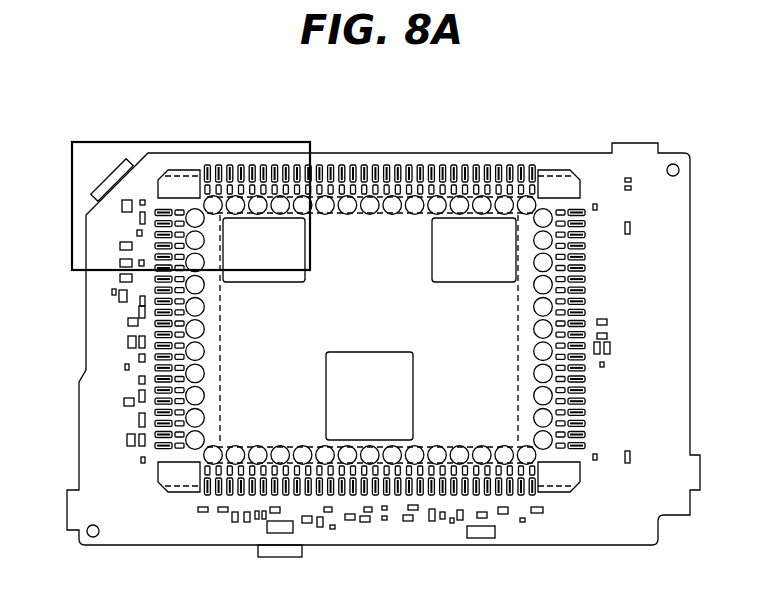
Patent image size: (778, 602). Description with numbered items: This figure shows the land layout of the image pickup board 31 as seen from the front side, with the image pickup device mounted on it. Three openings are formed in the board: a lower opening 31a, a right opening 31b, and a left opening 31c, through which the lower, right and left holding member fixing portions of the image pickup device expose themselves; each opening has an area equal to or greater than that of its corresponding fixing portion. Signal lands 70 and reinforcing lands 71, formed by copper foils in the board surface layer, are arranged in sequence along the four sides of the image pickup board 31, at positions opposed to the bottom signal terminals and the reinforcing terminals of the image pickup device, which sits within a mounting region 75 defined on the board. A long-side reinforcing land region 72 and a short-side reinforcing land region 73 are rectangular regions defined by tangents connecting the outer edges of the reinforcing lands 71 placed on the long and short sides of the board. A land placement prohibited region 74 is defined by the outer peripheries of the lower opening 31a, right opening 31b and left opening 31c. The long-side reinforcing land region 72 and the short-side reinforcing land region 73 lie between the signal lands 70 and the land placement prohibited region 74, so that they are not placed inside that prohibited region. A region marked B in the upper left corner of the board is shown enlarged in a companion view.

The image pickup board 31 is at (668, 326).
The lower opening 31a is at (374, 422).
The right opening 31b is at (280, 235).
The left opening 31c is at (490, 232).
The signal lands 70 is at (428, 203).
The reinforcing lands 71 is at (390, 207).
The long-side reinforcing land region 72 is at (341, 167).
The short-side reinforcing land region 73 is at (128, 322).
The land placement prohibited region 74 is at (256, 468).
The mounting region 75 is at (124, 404).
The region B is at (216, 140).